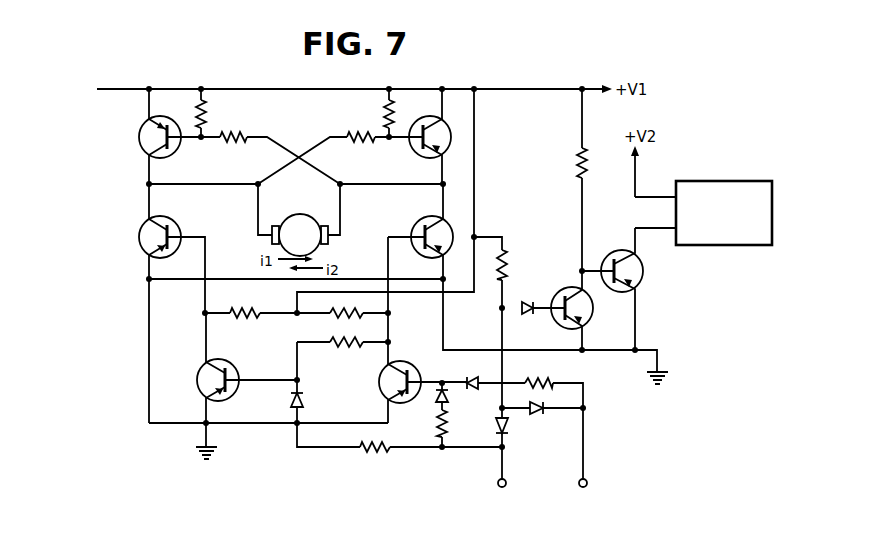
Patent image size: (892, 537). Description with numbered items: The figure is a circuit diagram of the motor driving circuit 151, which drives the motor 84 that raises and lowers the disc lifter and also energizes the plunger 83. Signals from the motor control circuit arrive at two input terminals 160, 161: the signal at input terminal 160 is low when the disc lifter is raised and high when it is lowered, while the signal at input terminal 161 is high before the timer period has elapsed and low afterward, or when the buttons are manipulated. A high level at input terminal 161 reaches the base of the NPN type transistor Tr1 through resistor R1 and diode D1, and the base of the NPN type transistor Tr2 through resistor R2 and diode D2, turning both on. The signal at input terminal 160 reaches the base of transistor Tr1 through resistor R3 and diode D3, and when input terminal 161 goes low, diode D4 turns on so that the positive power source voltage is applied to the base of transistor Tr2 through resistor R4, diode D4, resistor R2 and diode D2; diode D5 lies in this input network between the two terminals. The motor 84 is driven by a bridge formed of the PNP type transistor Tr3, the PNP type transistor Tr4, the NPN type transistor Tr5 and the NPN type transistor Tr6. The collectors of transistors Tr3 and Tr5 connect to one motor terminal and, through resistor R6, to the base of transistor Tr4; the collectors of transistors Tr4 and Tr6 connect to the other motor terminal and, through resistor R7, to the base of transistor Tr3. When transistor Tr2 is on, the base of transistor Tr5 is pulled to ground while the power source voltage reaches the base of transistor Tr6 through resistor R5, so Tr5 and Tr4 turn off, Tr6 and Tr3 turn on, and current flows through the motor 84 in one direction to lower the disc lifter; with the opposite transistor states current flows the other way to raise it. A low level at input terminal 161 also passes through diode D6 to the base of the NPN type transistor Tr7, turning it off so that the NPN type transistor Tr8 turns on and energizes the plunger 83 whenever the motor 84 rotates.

The motor driving circuit 151 is at (250, 71).
The motor 84 is at (297, 213).
The plunger 83 is at (724, 181).
The input terminal 160 is at (585, 488).
The input terminal 161 is at (501, 488).
The NPN type transistor Tr1 is at (406, 361).
The NPN type transistor Tr2 is at (229, 362).
The PNP type transistor Tr3 is at (139, 137).
The PNP type transistor Tr4 is at (418, 151).
The NPN type transistor Tr5 is at (139, 237).
The NPN type transistor Tr6 is at (416, 223).
The NPN type transistor Tr7 is at (565, 287).
The NPN type transistor Tr8 is at (643, 271).
The resistor R1 is at (454, 425).
The resistor R2 is at (375, 456).
The resistor R3 is at (539, 374).
The resistor R4 is at (513, 265).
The resistor R5 is at (343, 318).
The resistor R6 is at (361, 127).
The resistor R7 is at (233, 128).
The diode D1 is at (449, 394).
The diode D2 is at (311, 403).
The diode D3 is at (478, 373).
The diode D4 is at (510, 428).
The diode D5 is at (548, 413).
The diode D6 is at (533, 321).